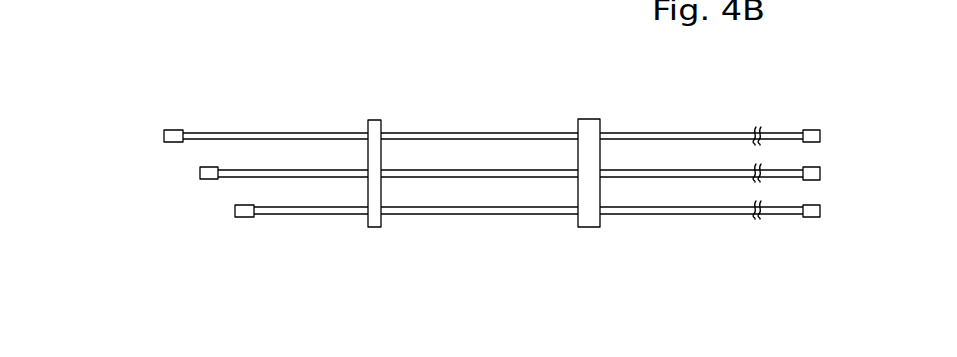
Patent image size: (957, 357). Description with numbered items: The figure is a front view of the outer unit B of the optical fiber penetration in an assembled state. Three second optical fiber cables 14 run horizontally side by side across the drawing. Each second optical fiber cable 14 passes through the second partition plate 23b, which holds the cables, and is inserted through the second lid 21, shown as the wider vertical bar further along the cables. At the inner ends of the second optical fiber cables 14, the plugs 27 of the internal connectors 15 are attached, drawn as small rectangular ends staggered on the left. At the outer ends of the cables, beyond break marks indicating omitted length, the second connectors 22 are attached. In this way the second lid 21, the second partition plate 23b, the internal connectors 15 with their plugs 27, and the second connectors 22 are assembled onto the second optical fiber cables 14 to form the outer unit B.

The second optical fiber cable 14 is at (472, 132).
The internal connector 15 is at (176, 130).
The plug 27 is at (173, 136).
The second lid 21 is at (588, 119).
The second connector 22 is at (817, 130).
The second partition plate 23b is at (376, 120).
The outer unit B is at (803, 88).